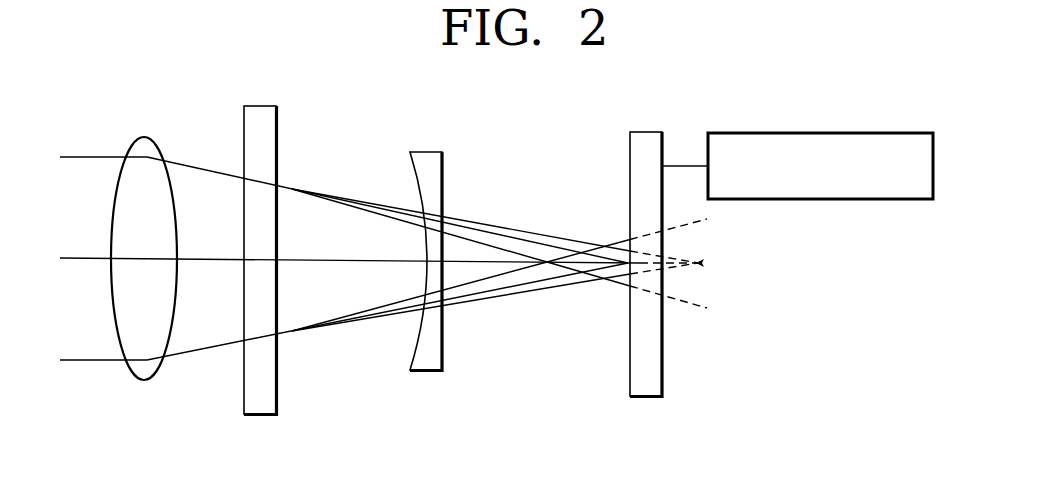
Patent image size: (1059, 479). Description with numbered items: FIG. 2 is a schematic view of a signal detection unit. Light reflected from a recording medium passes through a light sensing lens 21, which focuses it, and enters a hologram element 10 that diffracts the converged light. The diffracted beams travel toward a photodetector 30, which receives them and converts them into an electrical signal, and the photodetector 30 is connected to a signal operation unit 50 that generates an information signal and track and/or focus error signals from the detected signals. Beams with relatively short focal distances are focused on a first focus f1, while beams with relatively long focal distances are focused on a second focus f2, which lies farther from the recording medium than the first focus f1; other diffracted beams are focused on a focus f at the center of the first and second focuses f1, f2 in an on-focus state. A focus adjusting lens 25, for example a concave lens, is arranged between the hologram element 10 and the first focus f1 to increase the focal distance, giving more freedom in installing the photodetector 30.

The hologram element 10 is at (277, 400).
The light sensing lens 21 is at (144, 381).
The focus adjusting lens 25 is at (430, 371).
The photodetector 30 is at (651, 397).
The signal operation unit 50 is at (850, 200).
The focus f is at (625, 265).
The first focus f1 is at (547, 264).
The second focus f2 is at (701, 265).